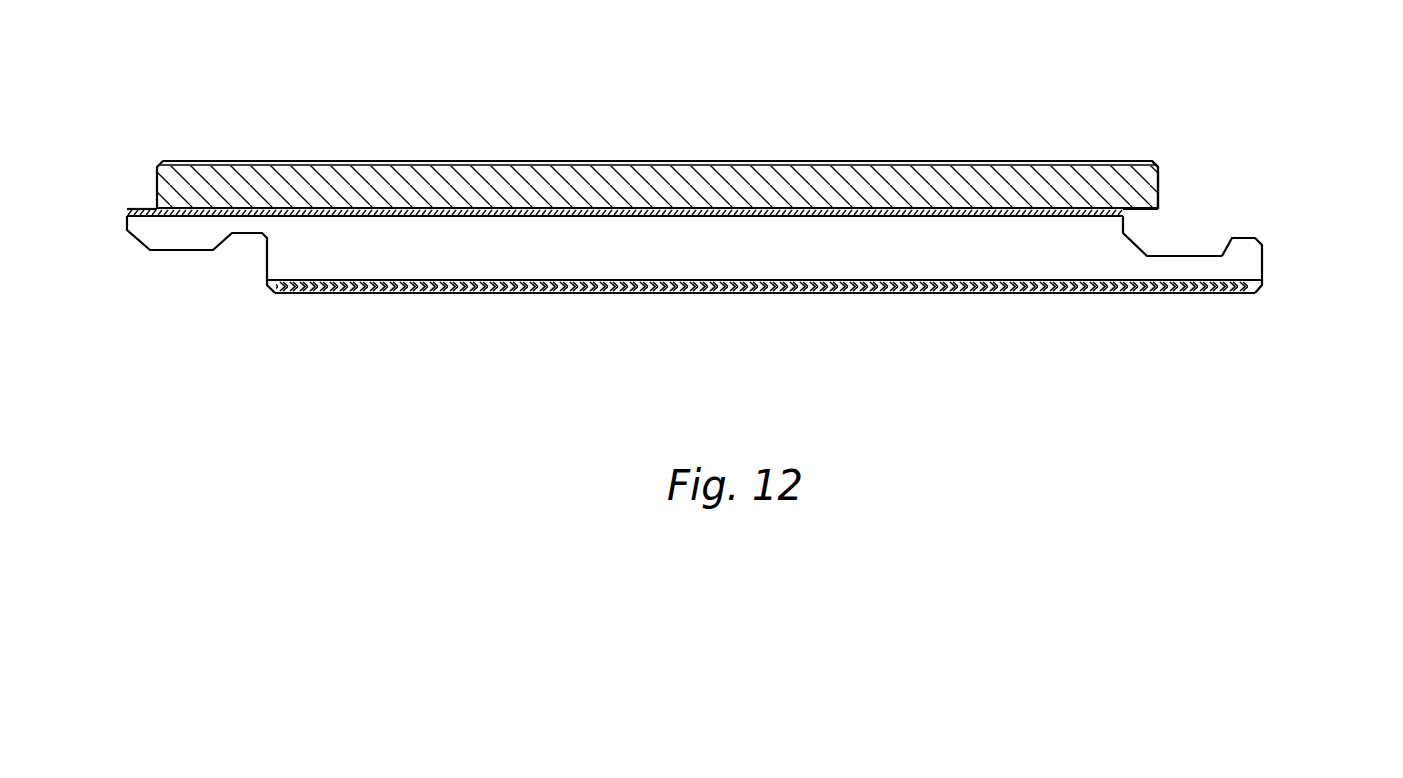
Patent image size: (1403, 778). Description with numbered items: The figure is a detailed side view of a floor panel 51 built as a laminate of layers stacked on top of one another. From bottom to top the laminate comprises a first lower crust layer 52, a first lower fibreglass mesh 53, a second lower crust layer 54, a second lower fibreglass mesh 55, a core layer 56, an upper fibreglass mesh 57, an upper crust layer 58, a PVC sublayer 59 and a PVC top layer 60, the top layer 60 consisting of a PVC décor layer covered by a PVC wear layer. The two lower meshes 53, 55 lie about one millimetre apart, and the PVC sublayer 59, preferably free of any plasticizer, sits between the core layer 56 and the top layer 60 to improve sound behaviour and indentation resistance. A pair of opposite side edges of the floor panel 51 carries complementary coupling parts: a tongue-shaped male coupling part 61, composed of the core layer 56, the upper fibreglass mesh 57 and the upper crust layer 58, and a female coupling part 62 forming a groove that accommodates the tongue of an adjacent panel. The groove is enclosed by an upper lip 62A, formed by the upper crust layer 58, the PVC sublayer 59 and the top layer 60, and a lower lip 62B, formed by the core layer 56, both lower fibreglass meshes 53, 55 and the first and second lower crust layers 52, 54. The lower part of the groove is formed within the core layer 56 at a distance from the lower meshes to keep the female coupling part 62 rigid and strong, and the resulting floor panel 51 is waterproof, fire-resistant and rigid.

The floor panel 51 is at (124, 133).
The first lower crust layer 52 is at (516, 293).
The first lower fibreglass mesh 53 is at (647, 293).
The second lower crust layer 54 is at (775, 293).
The second lower fibreglass mesh 55 is at (902, 293).
The core layer 56 is at (455, 247).
The upper fibreglass mesh 57 is at (583, 217).
The upper crust layer 58 is at (717, 210).
The PVC sublayer 59 is at (842, 192).
The PVC top layer 60 is at (968, 165).
The male coupling part 61 is at (143, 269).
The female coupling part 62 is at (1225, 208).
The upper lip 62A is at (1182, 168).
The lower lip 62B is at (1283, 254).